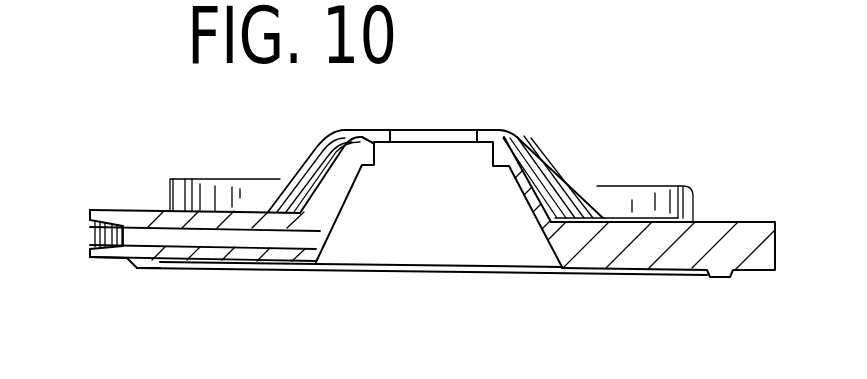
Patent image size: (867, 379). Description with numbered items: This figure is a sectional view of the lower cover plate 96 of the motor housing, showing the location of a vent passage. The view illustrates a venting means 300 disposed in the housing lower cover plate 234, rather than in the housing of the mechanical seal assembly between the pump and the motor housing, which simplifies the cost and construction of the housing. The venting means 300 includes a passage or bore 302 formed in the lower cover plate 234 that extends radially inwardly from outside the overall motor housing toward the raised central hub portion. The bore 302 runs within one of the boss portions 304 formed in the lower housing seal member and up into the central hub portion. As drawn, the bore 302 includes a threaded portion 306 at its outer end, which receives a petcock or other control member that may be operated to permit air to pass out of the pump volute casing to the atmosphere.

The lower cover plate 96 is at (553, 153).
The housing lower cover plate 234 is at (580, 177).
The venting means 300 is at (150, 214).
The bore 302 is at (238, 234).
The boss portion 304 is at (241, 253).
The threaded portion 306 is at (92, 237).